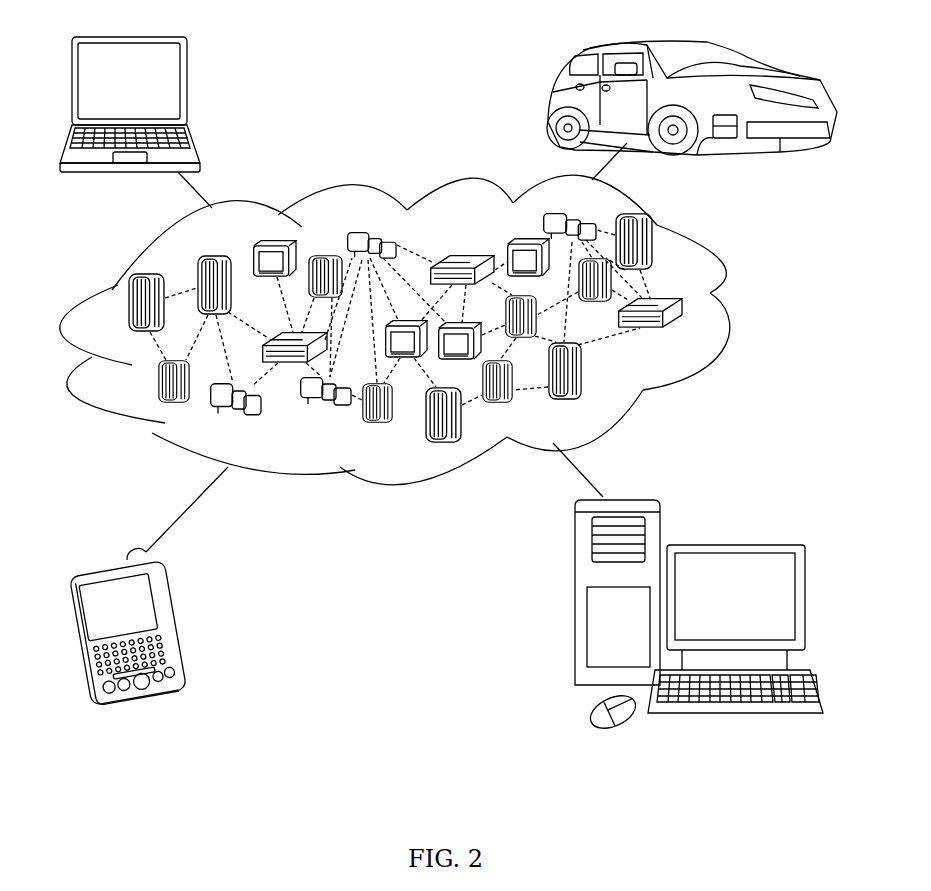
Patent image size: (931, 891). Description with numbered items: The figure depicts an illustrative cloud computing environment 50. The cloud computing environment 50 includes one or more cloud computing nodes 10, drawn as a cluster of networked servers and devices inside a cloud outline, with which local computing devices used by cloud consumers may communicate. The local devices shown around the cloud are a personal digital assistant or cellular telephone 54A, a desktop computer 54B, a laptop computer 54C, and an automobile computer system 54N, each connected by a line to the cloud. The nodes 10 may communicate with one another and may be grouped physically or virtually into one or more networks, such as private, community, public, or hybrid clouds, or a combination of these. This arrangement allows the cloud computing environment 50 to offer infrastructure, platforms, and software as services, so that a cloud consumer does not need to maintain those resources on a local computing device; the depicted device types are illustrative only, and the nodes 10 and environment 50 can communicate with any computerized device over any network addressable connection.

The cloud computing nodes 10 is at (683, 333).
The cloud computing environment 50 is at (733, 310).
The personal digital assistant or cellular telephone 54A is at (178, 623).
The desktop computer 54B is at (733, 543).
The laptop computer 54C is at (188, 88).
The automobile computer system 54N is at (549, 100).